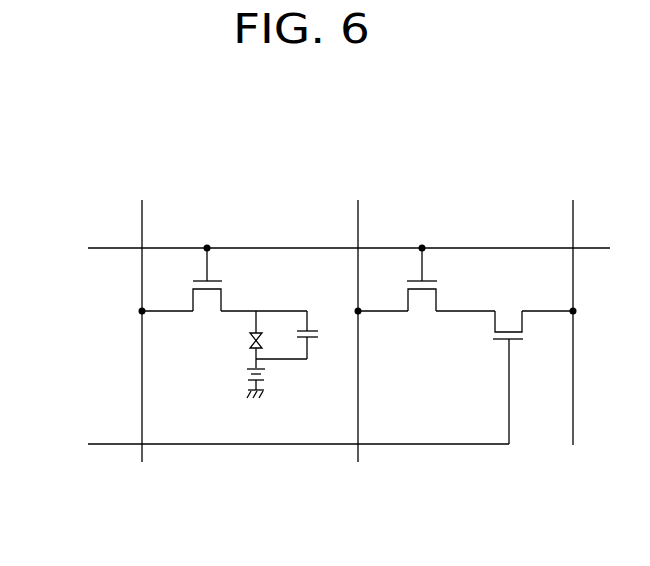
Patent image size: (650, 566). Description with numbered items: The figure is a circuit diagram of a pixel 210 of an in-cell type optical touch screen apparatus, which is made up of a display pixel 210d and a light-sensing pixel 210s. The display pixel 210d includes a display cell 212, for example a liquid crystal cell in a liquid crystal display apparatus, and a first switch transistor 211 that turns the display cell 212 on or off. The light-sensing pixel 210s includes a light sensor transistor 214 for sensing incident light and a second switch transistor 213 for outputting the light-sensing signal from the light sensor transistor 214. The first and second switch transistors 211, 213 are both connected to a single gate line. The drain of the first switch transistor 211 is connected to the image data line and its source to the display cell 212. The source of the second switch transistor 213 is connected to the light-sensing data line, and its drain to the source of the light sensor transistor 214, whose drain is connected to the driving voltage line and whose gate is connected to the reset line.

The pixel 210 is at (203, 533).
The display pixel 210d is at (252, 226).
The light-sensing pixel 210s is at (476, 226).
The first switch transistor 211 is at (209, 322).
The display cell 212 is at (305, 370).
The second switch transistor 213 is at (423, 322).
The light sensor transistor 214 is at (529, 354).